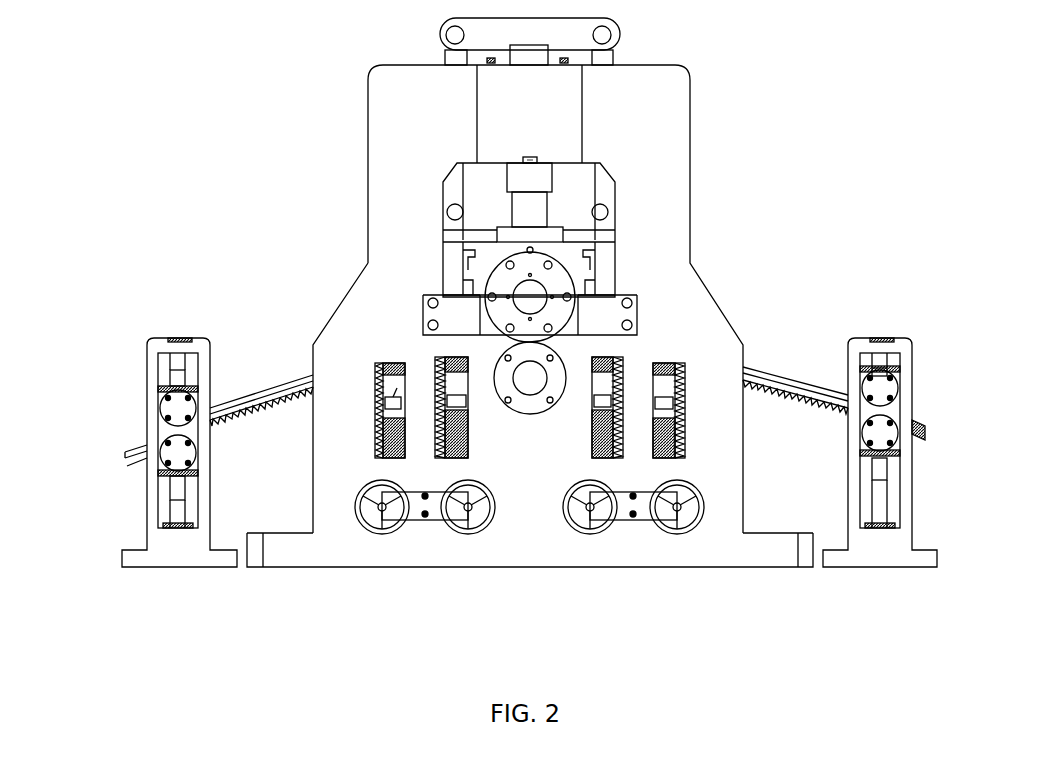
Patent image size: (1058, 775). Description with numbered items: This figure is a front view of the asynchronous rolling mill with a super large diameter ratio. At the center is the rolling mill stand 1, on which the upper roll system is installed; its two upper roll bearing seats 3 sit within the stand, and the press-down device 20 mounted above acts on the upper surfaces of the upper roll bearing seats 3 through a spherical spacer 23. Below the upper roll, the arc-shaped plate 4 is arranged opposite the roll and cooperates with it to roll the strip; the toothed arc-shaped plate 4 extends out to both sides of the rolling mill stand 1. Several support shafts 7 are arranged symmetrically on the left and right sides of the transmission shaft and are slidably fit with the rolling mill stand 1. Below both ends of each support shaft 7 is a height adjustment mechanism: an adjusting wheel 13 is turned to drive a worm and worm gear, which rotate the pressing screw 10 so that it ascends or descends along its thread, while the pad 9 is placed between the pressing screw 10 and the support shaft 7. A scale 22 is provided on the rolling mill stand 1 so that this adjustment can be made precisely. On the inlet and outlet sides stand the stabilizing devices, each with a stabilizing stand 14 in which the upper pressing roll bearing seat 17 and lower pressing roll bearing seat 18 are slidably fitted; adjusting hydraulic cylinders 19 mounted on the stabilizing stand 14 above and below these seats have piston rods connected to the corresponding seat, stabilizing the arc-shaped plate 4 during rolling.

The rolling mill stand 1 is at (412, 135).
The upper roll bearing seat 3 is at (475, 272).
The arc-shaped plate 4 is at (755, 367).
The support shaft 7 is at (376, 440).
The pad 9 is at (590, 412).
The pressing screw 10 is at (439, 460).
The adjusting wheel 13 is at (678, 515).
The stabilizing stand 14 is at (145, 340).
The upper pressing roll bearing seat 17 is at (167, 398).
The lower pressing roll bearing seat 18 is at (167, 437).
The adjusting hydraulic cylinder 19 is at (177, 378).
The press-down device 20 is at (530, 210).
The scale 22 is at (692, 435).
The spherical spacer 23 is at (547, 235).